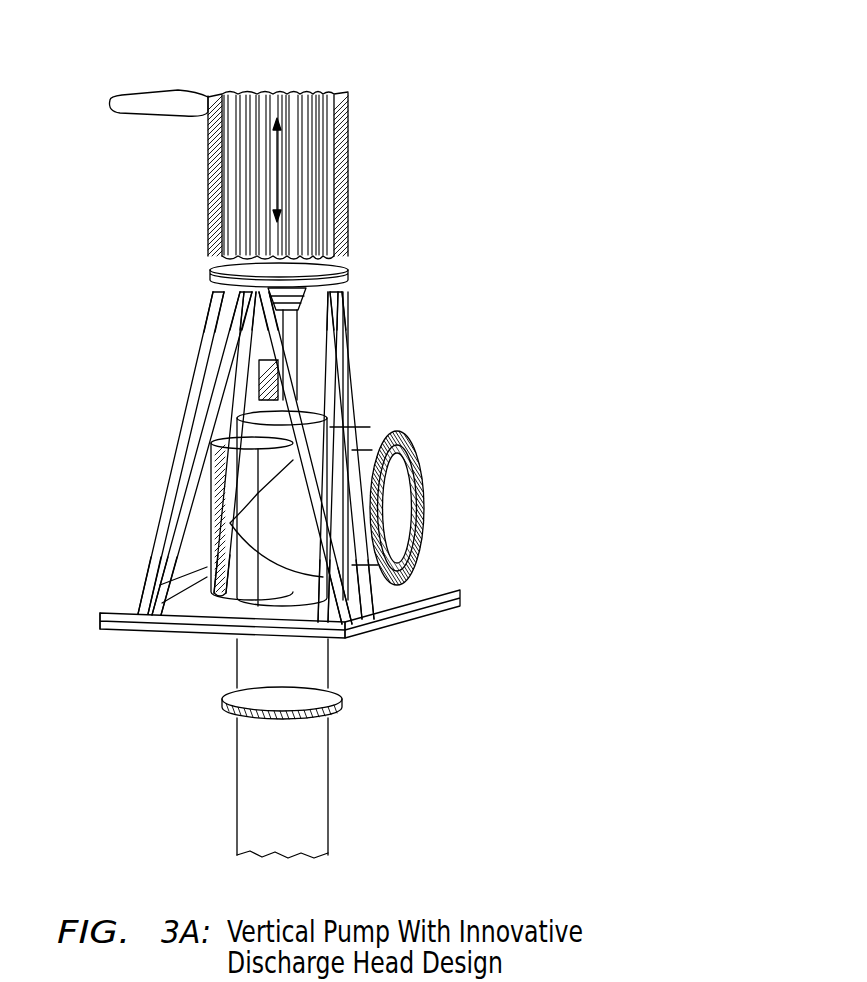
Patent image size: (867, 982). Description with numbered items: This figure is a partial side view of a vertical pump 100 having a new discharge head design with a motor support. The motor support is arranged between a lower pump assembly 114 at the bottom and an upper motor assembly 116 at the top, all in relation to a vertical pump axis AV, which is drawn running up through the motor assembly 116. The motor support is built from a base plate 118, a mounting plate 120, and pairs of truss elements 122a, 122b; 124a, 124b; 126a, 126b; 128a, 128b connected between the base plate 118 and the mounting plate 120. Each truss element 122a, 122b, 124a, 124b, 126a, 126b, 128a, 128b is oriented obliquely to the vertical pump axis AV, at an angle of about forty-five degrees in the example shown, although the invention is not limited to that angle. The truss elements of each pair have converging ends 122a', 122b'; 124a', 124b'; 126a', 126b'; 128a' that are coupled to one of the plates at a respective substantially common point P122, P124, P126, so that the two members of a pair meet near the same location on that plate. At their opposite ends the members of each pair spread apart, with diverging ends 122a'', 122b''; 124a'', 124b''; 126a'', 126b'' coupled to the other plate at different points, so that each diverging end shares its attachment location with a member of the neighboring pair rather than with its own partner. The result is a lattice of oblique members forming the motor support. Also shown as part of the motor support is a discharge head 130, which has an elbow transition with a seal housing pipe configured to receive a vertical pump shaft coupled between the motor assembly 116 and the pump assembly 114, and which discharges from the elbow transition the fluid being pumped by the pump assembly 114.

The vertical pump 100 is at (432, 74).
The lower pump assembly 114 is at (330, 755).
The upper motor assembly 116 is at (318, 98).
The base plate 118 is at (197, 640).
The mounting plate 120 is at (345, 235).
The truss element 122a is at (169, 444).
The truss element 122b is at (143, 453).
The truss element 124a is at (167, 453).
The truss element 124b is at (222, 458).
The truss element 126a is at (421, 455).
The truss element 126b is at (405, 457).
The truss element 128a is at (364, 449).
The truss element 128b is at (243, 482).
The discharge head 130 is at (400, 500).
The converging end 122a' is at (181, 302).
The converging end 122b' is at (154, 313).
The converging end 124a' is at (170, 258).
The converging end 124b' is at (208, 180).
The converging end 126a' is at (399, 311).
The converging end 126b' is at (394, 319).
The converging end 128a' is at (355, 256).
The diverging end 122a'' is at (133, 586).
The diverging end 122b'' is at (97, 567).
The diverging end 124a'' is at (113, 584).
The diverging end 124b'' is at (421, 616).
The diverging end 126a'' is at (458, 594).
The diverging end 126b'' is at (436, 585).
The substantially common point P122 is at (213, 278).
The substantially common point P124 is at (243, 258).
The substantially common point P126 is at (350, 284).
The vertical pump axis AV is at (262, 88).